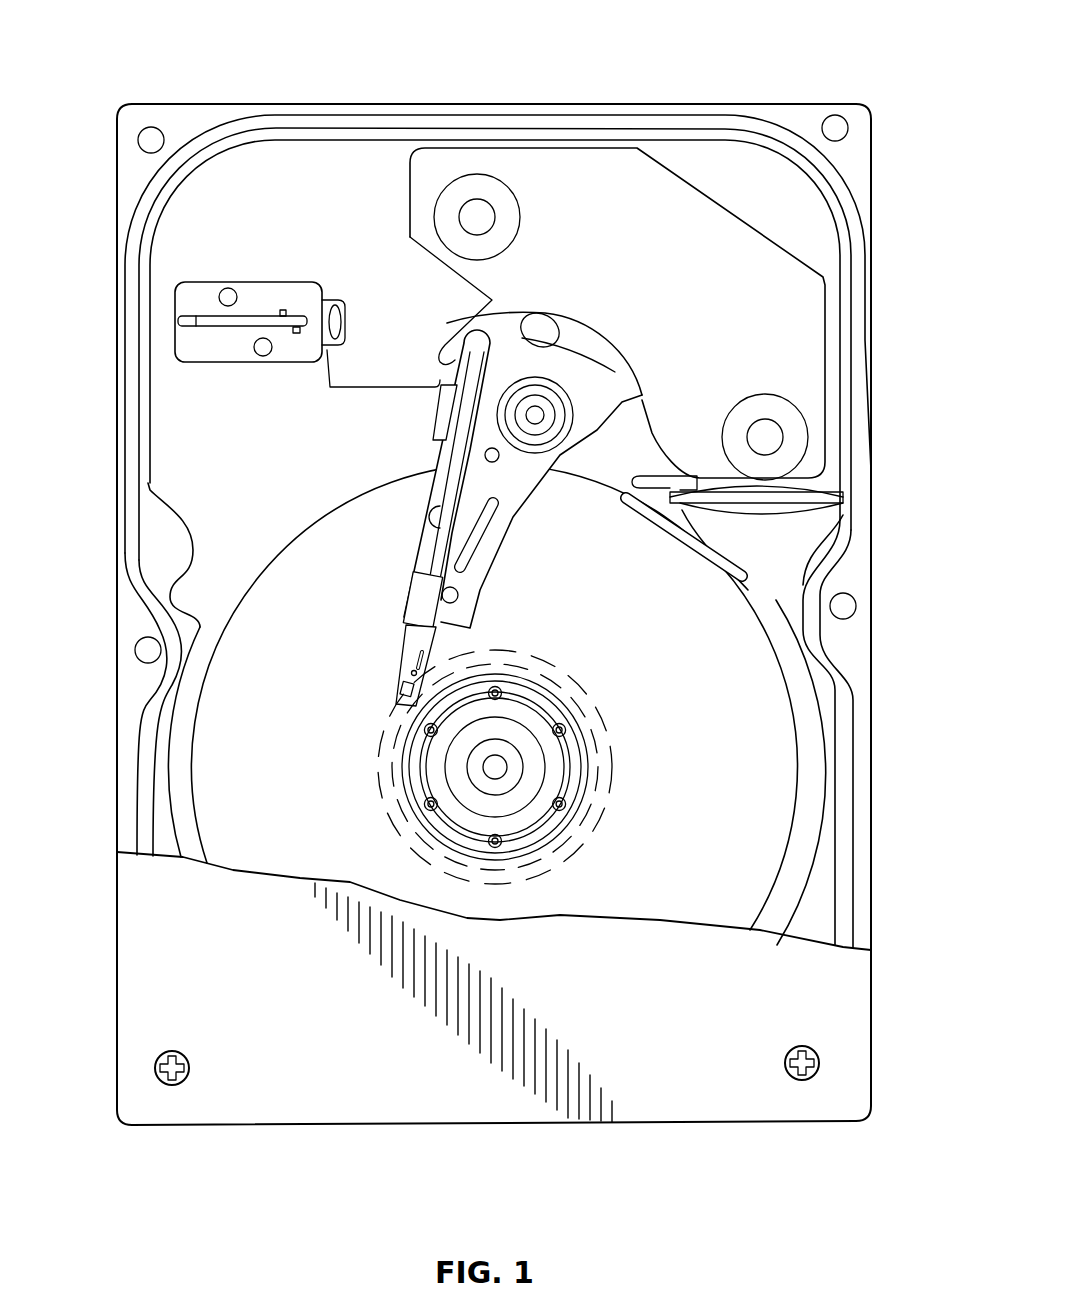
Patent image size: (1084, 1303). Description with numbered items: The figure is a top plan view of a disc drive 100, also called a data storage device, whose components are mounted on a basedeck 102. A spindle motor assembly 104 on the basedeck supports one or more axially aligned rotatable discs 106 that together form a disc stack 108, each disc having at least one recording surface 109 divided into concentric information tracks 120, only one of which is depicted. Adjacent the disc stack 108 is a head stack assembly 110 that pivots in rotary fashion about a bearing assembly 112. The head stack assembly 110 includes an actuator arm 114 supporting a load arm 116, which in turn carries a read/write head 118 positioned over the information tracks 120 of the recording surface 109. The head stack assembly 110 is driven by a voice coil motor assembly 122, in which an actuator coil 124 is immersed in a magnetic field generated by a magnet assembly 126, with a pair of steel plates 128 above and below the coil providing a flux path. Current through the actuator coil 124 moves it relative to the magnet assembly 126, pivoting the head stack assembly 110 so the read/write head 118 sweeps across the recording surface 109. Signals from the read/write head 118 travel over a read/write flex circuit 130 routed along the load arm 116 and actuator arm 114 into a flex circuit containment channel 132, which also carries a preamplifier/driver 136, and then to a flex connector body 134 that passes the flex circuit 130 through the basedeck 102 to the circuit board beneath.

The disc drive 100 is at (397, 78).
The basedeck 102 is at (322, 188).
The spindle motor assembly 104 is at (546, 708).
The rotatable disc 106 is at (798, 750).
The disc stack 108 is at (800, 784).
The recording surface 109 is at (697, 642).
The head stack assembly 110 is at (527, 530).
The bearing assembly 112 is at (583, 402).
The actuator arm 114 is at (463, 583).
The load arm 116 is at (407, 650).
The read/write head 118 is at (395, 692).
The information track 120 is at (588, 830).
The voice coil motor assembly 122 is at (810, 270).
The actuator coil 124 is at (538, 325).
The magnet assembly 126 is at (565, 172).
The steel plates 128 is at (795, 355).
The read/write flex circuit 130 is at (330, 387).
The flex circuit containment channel 132 is at (435, 508).
The flex connector body 134 is at (188, 352).
The preamplifier/driver 136 is at (440, 415).